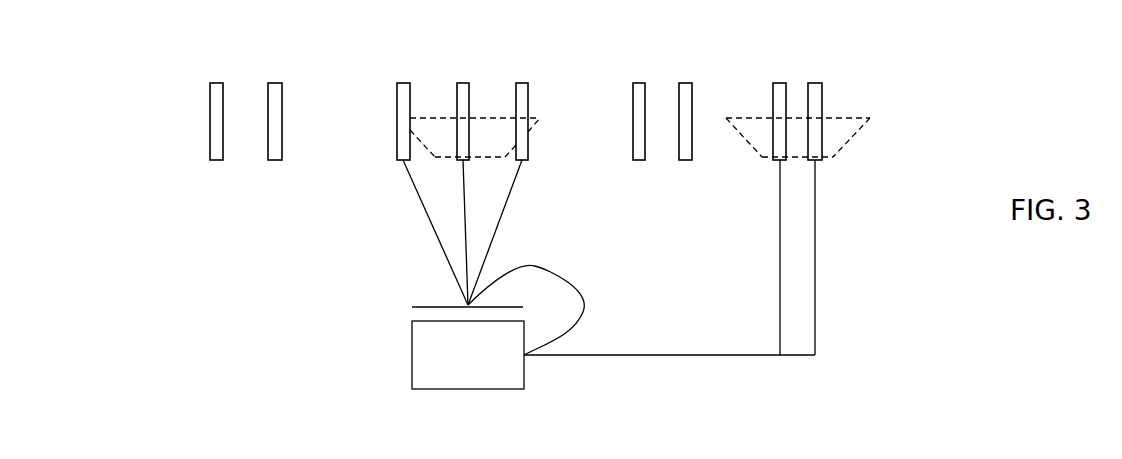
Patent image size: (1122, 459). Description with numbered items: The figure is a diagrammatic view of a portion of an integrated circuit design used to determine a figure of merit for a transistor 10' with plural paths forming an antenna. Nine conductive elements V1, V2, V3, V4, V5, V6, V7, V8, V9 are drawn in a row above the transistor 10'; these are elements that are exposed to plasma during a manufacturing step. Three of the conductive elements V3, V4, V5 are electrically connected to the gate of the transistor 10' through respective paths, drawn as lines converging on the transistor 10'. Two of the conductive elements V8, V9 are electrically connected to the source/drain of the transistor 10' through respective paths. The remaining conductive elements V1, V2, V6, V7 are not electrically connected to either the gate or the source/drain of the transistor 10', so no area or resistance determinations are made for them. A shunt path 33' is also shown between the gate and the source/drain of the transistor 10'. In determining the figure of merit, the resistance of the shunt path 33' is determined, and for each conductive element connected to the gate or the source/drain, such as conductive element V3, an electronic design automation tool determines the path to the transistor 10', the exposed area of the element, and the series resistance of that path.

The conductive element V1 is at (217, 83).
The conductive element V2 is at (275, 83).
The conductive element V3 is at (404, 83).
The conductive element V4 is at (463, 83).
The conductive element V5 is at (522, 83).
The conductive element V6 is at (639, 83).
The conductive element V7 is at (686, 83).
The conductive element V8 is at (780, 83).
The conductive element V9 is at (815, 83).
The transistor 10' is at (468, 355).
The shunt path 33' is at (550, 297).